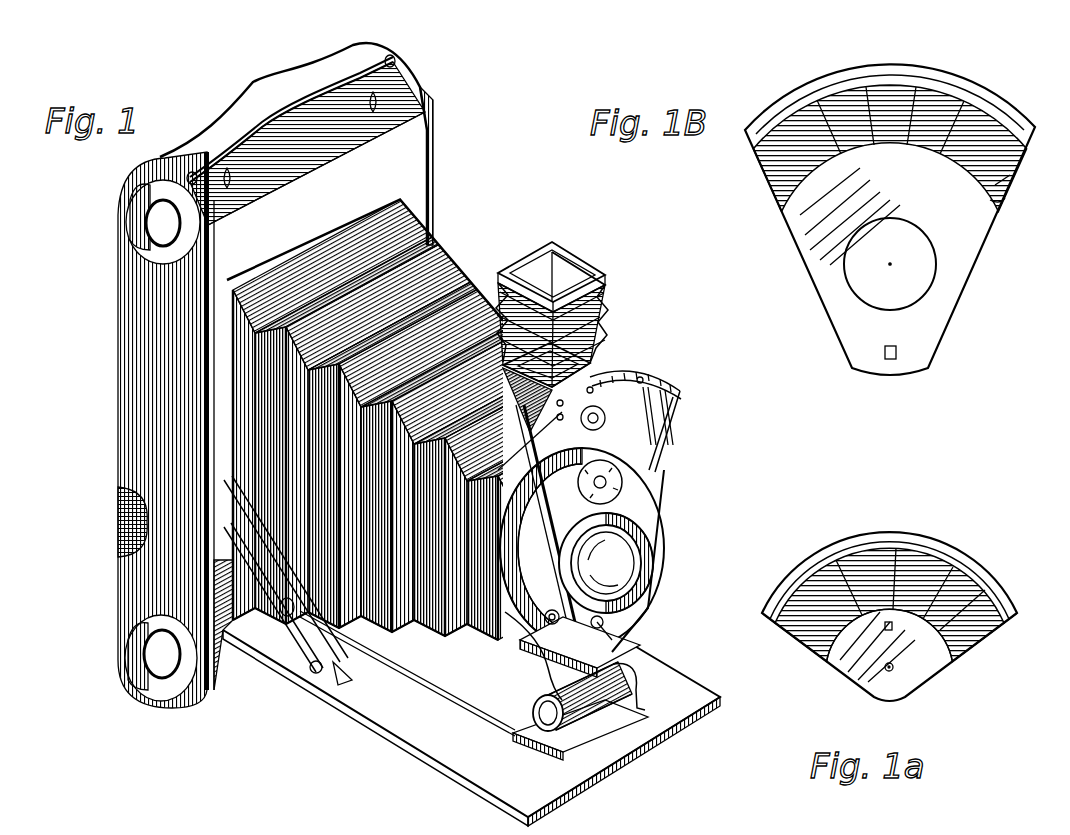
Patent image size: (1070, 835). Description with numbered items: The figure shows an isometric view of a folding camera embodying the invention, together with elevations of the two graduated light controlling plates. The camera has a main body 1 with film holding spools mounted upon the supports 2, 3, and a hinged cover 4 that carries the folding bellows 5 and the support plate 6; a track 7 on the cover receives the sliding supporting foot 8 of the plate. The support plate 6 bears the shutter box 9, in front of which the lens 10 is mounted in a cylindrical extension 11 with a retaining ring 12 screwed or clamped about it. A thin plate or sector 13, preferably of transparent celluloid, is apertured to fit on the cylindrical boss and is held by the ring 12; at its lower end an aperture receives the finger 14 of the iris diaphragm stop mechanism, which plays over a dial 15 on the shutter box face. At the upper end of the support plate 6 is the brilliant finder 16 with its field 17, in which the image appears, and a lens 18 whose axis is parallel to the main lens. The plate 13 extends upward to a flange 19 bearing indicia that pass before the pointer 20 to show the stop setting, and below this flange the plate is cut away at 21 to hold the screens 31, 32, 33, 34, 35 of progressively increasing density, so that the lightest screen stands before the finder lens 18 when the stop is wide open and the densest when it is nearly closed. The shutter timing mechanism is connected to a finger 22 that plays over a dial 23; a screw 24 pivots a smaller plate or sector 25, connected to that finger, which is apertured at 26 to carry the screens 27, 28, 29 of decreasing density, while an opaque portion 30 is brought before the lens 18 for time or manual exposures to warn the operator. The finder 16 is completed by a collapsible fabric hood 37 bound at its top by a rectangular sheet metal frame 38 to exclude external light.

In FIG. 1, the main body 1 is at (167, 352).
In FIG. 1, the support 2 is at (167, 217).
In FIG. 1, the support 3 is at (160, 656).
In FIG. 1, the hinged cover 4 is at (303, 677).
In FIG. 1, the folding bellows 5 is at (433, 278).
In FIG. 1, the support plate 6 is at (640, 592).
In FIG. 1, the track 7 is at (472, 710).
In FIG. 1, the supporting foot 8 is at (633, 695).
In FIG. 1, the shutter box 9 is at (523, 548).
In FIG. 1, the lens 10 is at (643, 583).
In FIG. 1, the cylindrical extension 11 is at (640, 535).
In FIG. 1, the retaining ring 12 is at (647, 563).
In FIG. 1, the plate or sector 13 is at (646, 447).
In FIG. 1B, the plate or sector 13 is at (945, 240).
In FIG. 1, the finger 14 is at (597, 623).
In FIG. 1, the dial 15 is at (550, 665).
In FIG. 1, the finder 16 is at (592, 372).
In FIG. 1, the field 17 is at (593, 358).
In FIG. 1, the lens 18 is at (590, 418).
In FIG. 1, the flange 19 is at (677, 382).
In FIG. 1B, the flange 19 is at (757, 122).
In FIG. 1, the pointer 20 is at (593, 382).
In FIG. 1, the cut away portion 21 is at (662, 428).
In FIG. 1B, the cut away portion 21 is at (983, 193).
In FIG. 1, the finger 22 is at (615, 458).
In FIG. 1, the dial 23 is at (592, 497).
In FIG. 1, the screw 24 is at (623, 482).
In FIG. 1, the plate or sector 25 is at (640, 377).
In FIG. 1A, the plate or sector 25 is at (938, 655).
In FIG. 1A, the aperture 26 is at (823, 640).
In FIG. 1A, the screen 27 is at (935, 573).
In FIG. 1A, the screen 28 is at (878, 557).
In FIG. 1A, the screen 29 is at (818, 580).
In FIG. 1A, the opaque portion 30 is at (970, 595).
In FIG. 1B, the screen 31 is at (790, 110).
In FIG. 1B, the screen 32 is at (845, 105).
In FIG. 1B, the screen 33 is at (903, 95).
In FIG. 1B, the screen 34 is at (932, 100).
In FIG. 1B, the screen 35 is at (985, 110).
In FIG. 1, the folding hood 37 is at (598, 305).
In FIG. 1, the rectangular frame 38 is at (527, 260).